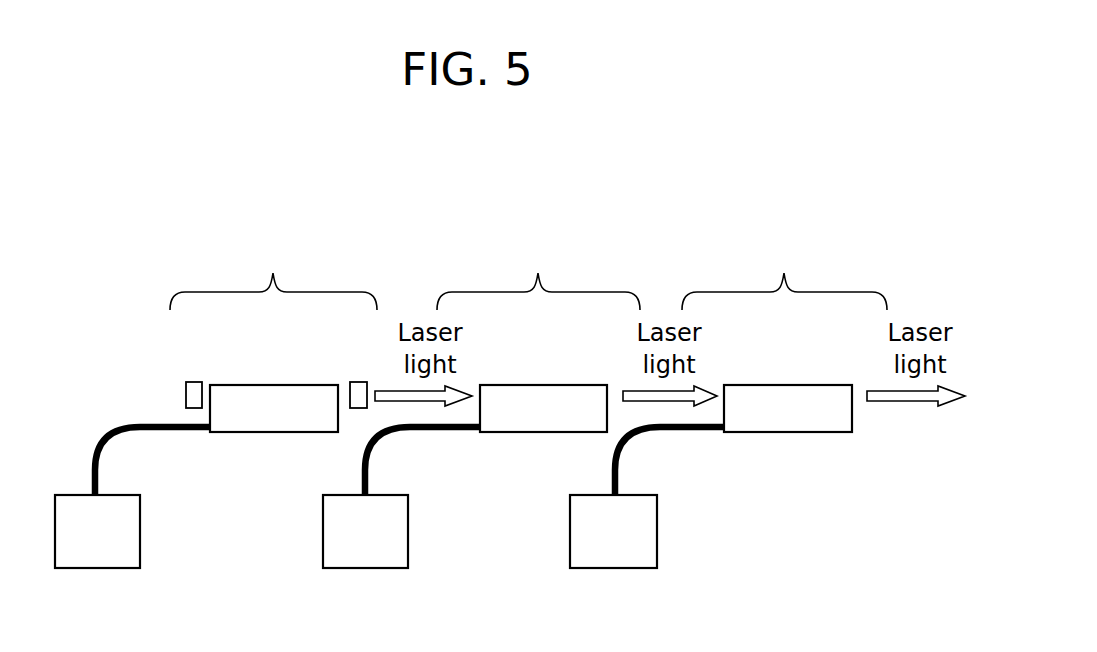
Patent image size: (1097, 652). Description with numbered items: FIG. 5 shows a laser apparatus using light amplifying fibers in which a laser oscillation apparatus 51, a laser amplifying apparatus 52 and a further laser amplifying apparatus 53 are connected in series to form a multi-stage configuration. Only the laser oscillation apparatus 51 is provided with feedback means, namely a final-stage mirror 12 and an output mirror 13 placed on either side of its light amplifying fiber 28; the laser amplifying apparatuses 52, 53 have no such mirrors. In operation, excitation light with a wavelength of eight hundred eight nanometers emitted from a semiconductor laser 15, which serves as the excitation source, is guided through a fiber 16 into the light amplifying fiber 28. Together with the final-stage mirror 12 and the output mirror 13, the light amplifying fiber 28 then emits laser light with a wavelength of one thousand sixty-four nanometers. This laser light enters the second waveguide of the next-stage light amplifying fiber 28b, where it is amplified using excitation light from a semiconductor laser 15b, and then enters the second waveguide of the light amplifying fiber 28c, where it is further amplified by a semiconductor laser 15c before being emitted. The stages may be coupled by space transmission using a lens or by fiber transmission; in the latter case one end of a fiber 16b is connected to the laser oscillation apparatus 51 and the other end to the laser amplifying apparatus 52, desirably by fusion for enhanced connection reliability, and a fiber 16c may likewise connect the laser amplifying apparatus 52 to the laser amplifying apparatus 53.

The final-stage mirror 12 is at (197, 380).
The output mirror 13 is at (358, 380).
The semiconductor laser 15 is at (72, 493).
The semiconductor laser 15b is at (335, 493).
The semiconductor laser 15c is at (582, 493).
The fiber 16 is at (142, 423).
The fiber 16b is at (437, 430).
The fiber 16c is at (687, 430).
The light amplifying fiber 28 is at (297, 383).
The light amplifying fiber 28b is at (565, 383).
The light amplifying fiber 28c is at (810, 383).
The laser oscillation apparatus 51 is at (273, 270).
The laser amplifying apparatus 52 is at (538, 270).
The laser amplifying apparatus 53 is at (784, 270).